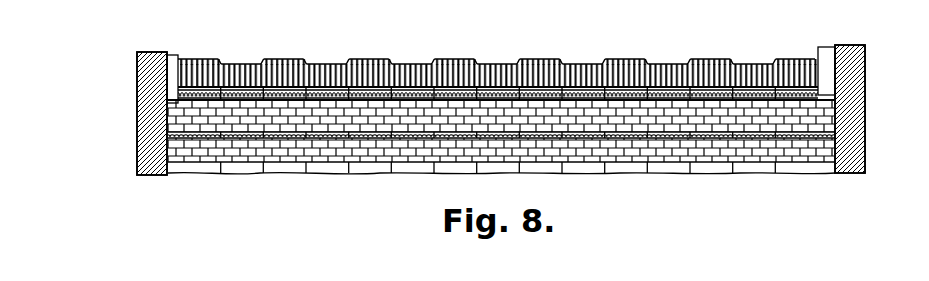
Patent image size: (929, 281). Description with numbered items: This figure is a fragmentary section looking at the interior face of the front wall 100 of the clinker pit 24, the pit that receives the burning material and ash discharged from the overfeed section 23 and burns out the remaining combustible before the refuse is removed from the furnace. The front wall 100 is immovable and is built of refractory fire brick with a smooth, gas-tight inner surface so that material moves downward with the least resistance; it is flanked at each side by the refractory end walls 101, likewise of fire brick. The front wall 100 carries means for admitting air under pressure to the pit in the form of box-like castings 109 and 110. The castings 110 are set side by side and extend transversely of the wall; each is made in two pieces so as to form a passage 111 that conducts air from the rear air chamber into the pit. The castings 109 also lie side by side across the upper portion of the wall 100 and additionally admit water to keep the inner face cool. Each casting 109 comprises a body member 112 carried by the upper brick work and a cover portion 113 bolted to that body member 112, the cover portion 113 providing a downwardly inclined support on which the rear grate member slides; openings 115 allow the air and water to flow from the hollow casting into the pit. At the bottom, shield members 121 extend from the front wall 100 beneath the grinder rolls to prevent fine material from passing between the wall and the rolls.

The front wall 100 is at (640, 115).
The end walls 101 is at (150, 127).
The box-like castings 109 is at (270, 100).
The box-like castings 110 is at (758, 135).
The passage 111 is at (683, 133).
The body member 112 is at (178, 101).
The cover portion 113 is at (176, 88).
The openings 115 is at (415, 92).
The shield members 121 is at (245, 183).
The overfeed section 23 is at (503, 67).
The clinker pit 24 is at (813, 118).